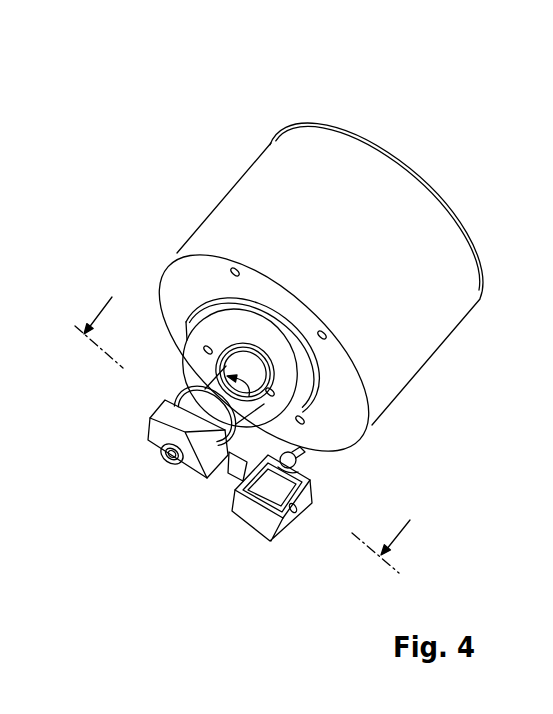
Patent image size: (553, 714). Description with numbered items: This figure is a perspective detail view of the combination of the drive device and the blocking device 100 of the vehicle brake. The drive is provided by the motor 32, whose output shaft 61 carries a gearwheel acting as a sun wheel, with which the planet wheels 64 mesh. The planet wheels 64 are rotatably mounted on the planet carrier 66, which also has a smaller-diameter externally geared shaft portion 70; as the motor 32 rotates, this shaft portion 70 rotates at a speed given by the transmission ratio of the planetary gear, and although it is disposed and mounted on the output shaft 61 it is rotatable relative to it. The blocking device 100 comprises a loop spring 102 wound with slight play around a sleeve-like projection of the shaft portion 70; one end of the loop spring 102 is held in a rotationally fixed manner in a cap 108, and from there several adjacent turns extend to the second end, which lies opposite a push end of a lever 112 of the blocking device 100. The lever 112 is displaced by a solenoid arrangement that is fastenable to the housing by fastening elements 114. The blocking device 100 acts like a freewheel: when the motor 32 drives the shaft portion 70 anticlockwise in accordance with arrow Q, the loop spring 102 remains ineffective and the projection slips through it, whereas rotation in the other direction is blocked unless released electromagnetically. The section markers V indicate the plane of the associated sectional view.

The motor 32 is at (330, 242).
The planet wheels 64 is at (243, 337).
The planet carrier 66 is at (367, 375).
The shaft portion 70 is at (196, 342).
The arrow Q is at (366, 391).
The cap 108 is at (131, 423).
The output shaft 61 is at (147, 501).
The loop spring 102 is at (174, 508).
The lever 112 is at (370, 460).
The fastening elements 114 is at (357, 490).
The blocking device 100 is at (309, 533).
The section line V- V is at (246, 435).